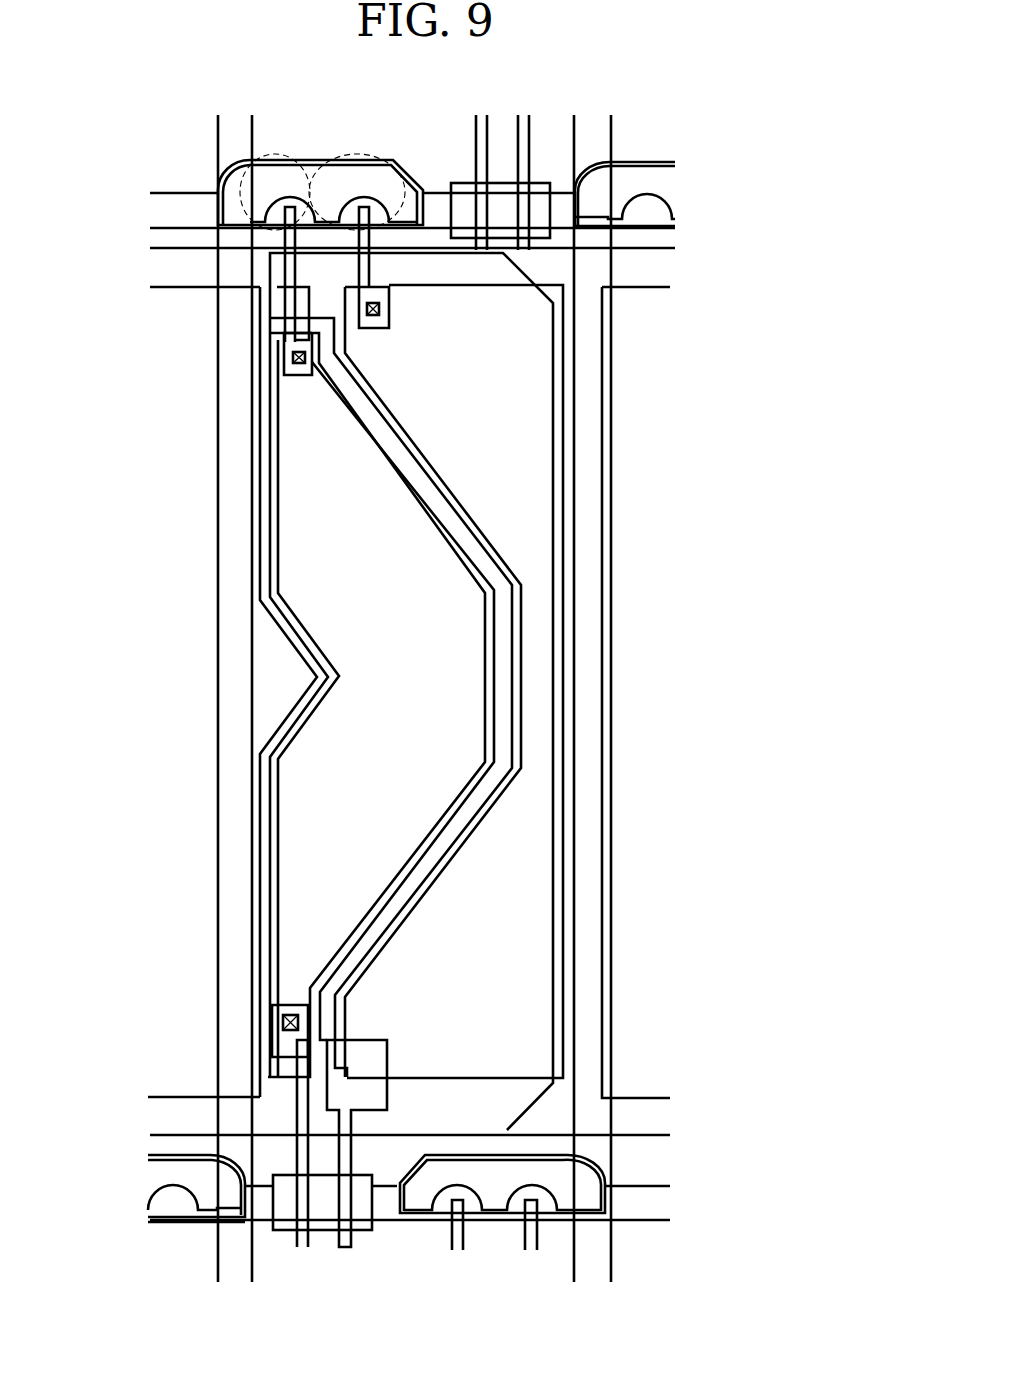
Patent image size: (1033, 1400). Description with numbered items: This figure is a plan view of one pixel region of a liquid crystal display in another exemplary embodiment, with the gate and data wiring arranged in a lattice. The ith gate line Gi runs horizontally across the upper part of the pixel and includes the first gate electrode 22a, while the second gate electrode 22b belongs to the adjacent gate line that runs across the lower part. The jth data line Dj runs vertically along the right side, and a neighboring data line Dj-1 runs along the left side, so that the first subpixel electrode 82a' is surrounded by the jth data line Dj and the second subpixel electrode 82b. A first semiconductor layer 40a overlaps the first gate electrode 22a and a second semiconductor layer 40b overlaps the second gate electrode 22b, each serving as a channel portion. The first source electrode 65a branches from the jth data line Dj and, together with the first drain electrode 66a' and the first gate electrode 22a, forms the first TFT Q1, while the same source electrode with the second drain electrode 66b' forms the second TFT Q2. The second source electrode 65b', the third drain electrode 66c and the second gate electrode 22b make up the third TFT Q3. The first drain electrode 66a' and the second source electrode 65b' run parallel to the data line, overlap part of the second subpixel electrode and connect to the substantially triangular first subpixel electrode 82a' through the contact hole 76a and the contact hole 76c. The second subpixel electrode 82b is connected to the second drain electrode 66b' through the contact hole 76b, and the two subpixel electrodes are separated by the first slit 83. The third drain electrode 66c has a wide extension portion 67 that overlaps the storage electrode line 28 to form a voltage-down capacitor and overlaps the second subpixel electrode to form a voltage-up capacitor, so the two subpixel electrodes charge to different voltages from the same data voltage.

The first gate electrode 22a is at (393, 160).
The second gate electrode 22b is at (322, 1210).
The first semiconductor layer 40a is at (218, 188).
The second semiconductor layer 40b is at (270, 1207).
The first source electrode 65a is at (415, 207).
The second source electrode 65b' is at (193, 1128).
The first drain electrode 66a' is at (226, 313).
The second drain electrode 66b' is at (518, 320).
The third drain electrode 66c is at (383, 1133).
The wide extension portion 67 is at (387, 1108).
The contact hole 76a is at (285, 357).
The contact hole 76b is at (388, 312).
The contact hole 76c is at (287, 1063).
The first subpixel electrode 82a' is at (489, 682).
The second subpixel electrode 82b is at (555, 420).
The first slit 83 is at (437, 500).
The storage electrode line 28 is at (630, 1122).
The first TFT Q1 is at (283, 147).
The second TFT Q2 is at (373, 147).
The third TFT Q3 is at (318, 1255).
The data line j-1 Dj-1 is at (232, 132).
The jth data line Dj is at (600, 142).
The ith gate line Gi is at (180, 215).